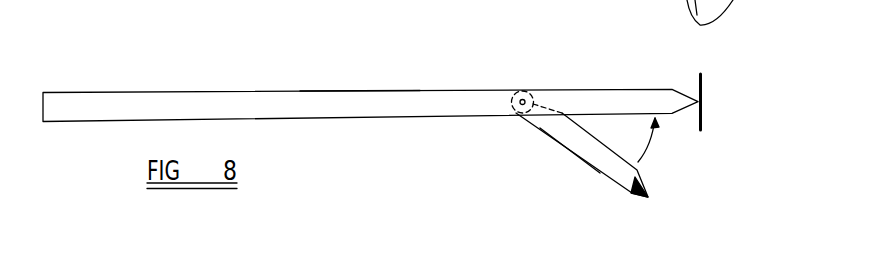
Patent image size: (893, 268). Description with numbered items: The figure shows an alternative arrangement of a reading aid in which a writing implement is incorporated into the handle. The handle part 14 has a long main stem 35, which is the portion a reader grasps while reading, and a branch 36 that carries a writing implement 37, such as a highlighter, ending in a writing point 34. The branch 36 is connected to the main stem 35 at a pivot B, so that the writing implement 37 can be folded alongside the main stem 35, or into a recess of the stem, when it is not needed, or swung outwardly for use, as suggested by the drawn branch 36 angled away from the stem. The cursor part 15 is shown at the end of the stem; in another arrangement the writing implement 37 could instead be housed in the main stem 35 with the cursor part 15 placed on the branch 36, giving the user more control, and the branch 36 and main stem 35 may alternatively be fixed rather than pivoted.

The handle part 14 is at (267, 90).
The main stem 35 is at (393, 104).
The cursor part 15 is at (703, 117).
The pivot B is at (525, 99).
The branch 36 is at (597, 158).
The writing implement 37 is at (562, 130).
The writing point 34 is at (648, 197).